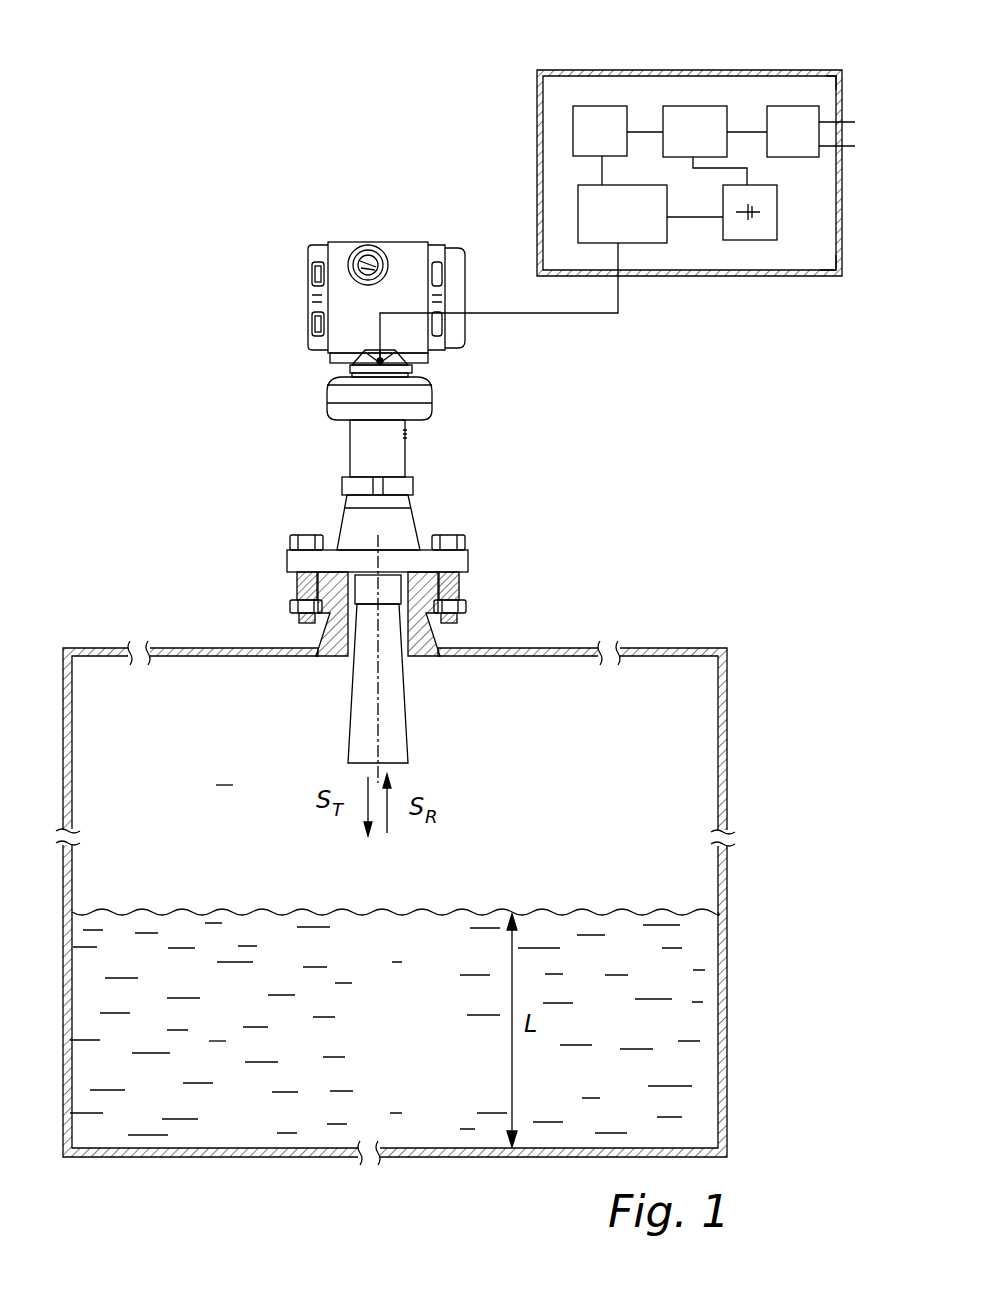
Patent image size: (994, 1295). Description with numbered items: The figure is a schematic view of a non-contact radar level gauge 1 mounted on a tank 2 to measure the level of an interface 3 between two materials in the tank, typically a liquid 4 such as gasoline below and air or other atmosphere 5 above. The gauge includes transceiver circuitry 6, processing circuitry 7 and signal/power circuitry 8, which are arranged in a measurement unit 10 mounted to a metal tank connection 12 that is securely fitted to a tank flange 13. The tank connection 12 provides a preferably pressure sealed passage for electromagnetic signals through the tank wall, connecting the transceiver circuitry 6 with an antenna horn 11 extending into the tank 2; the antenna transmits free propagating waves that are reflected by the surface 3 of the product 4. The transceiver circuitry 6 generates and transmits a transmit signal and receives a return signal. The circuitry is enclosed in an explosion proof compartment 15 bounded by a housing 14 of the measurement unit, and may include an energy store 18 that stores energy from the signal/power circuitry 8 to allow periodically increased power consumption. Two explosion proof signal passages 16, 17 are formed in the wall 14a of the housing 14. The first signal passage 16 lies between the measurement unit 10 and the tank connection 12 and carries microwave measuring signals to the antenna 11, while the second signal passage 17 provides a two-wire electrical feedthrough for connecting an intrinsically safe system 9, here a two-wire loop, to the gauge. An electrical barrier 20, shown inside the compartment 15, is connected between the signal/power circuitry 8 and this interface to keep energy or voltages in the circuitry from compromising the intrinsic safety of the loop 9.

The radar level gauge 1 is at (228, 347).
The tank 2 is at (533, 650).
The interface 3 is at (152, 908).
The liquid 4 is at (387, 1029).
The atmosphere 5 is at (224, 773).
The transceiver circuitry 6 is at (667, 230).
The processing circuitry 7 is at (600, 106).
The signal/power circuitry 8 is at (688, 106).
The intrinsically safe system 9 is at (850, 122).
The measurement unit 10 is at (338, 422).
The antenna horn 11 is at (403, 712).
The tank connection 12 is at (347, 513).
The tank flange 13 is at (435, 645).
The housing 14 is at (842, 173).
The wall 14a is at (841, 263).
The explosion proof compartment 15 is at (790, 249).
The first signal passage 16 is at (623, 277).
The second signal passage 17 is at (841, 76).
The energy store 18 is at (746, 240).
The electrical barrier 20 is at (792, 106).